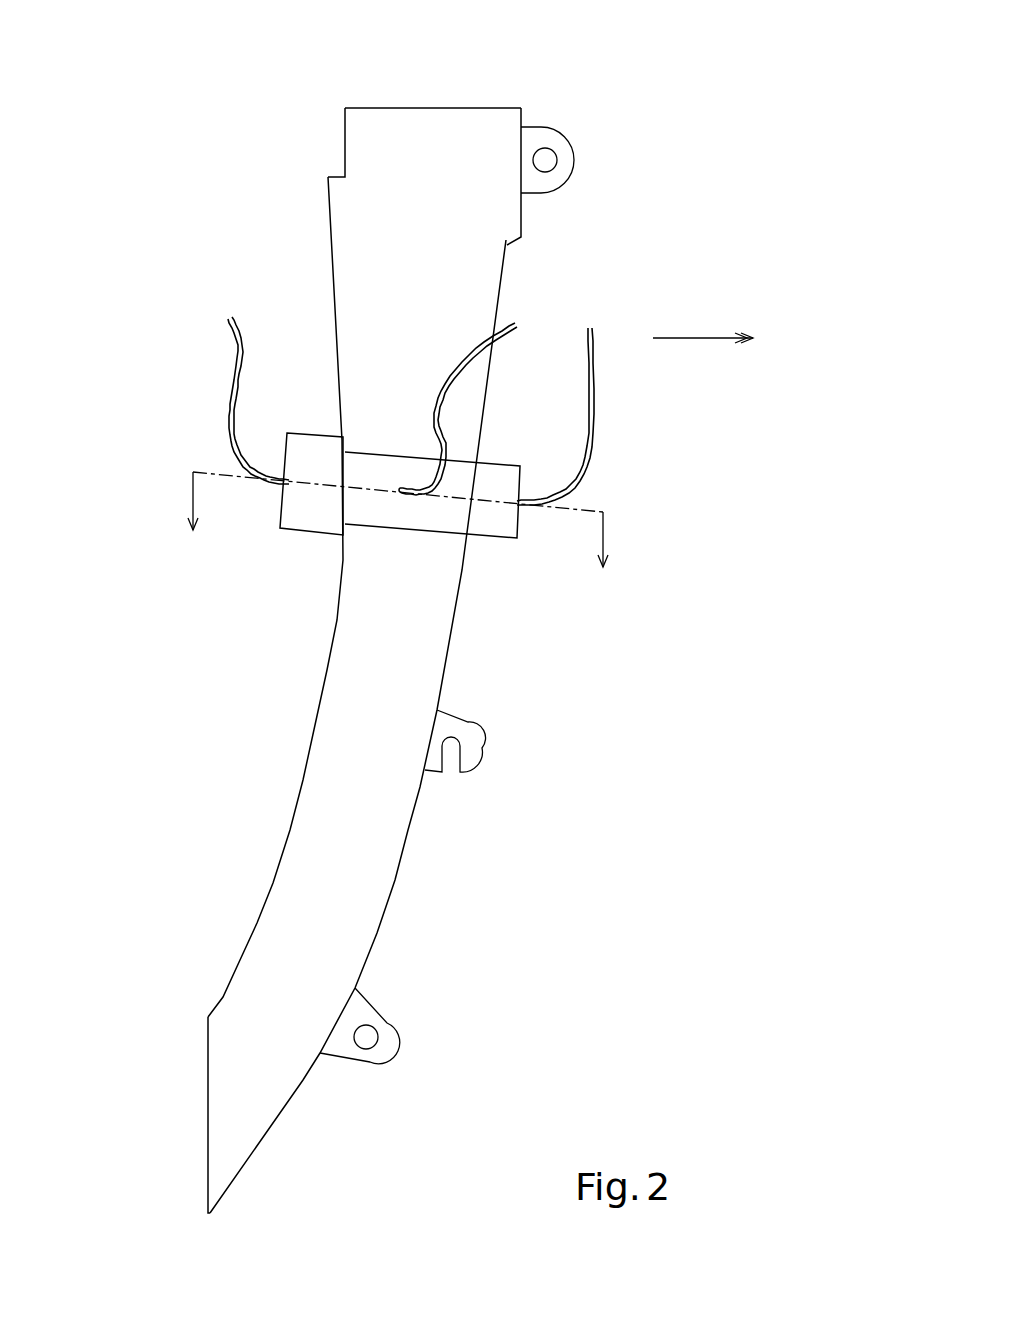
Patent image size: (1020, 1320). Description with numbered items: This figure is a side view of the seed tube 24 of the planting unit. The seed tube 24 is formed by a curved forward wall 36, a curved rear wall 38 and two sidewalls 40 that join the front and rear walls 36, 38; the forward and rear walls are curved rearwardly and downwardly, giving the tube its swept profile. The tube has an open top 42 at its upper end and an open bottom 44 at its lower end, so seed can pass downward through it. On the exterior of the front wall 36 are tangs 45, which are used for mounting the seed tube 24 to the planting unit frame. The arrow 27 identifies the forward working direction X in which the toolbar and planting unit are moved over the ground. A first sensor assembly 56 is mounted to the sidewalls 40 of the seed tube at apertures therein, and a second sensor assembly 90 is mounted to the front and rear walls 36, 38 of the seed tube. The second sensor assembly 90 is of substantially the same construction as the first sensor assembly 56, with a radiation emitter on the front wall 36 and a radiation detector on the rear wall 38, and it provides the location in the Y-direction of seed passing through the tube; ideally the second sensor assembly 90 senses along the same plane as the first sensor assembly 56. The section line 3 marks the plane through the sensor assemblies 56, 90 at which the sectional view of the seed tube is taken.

The section line 3- 3 is at (392, 537).
The seed tube 24 is at (510, 292).
The arrow 27 is at (702, 340).
The curved forward wall 36 is at (487, 408).
The curved rear wall 38 is at (340, 317).
The sidewalls 40 is at (430, 263).
The open top 42 is at (441, 106).
The open bottom 44 is at (207, 1105).
The tangs 45 is at (573, 153).
The first sensor assembly 56 is at (368, 537).
The second sensor assembly 90 is at (503, 562).